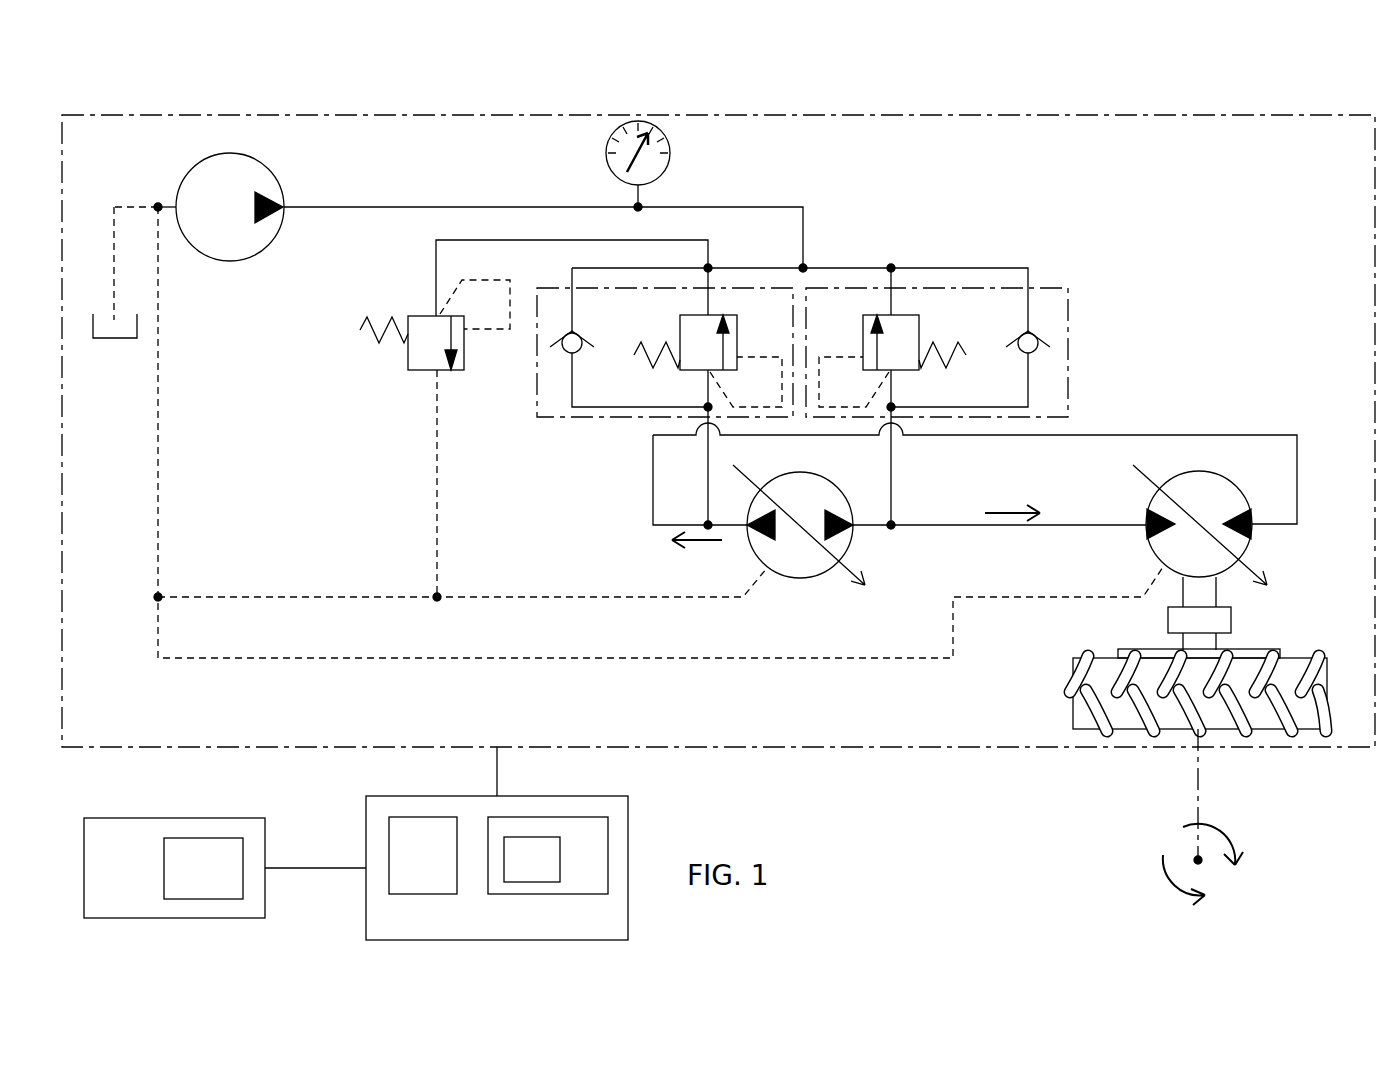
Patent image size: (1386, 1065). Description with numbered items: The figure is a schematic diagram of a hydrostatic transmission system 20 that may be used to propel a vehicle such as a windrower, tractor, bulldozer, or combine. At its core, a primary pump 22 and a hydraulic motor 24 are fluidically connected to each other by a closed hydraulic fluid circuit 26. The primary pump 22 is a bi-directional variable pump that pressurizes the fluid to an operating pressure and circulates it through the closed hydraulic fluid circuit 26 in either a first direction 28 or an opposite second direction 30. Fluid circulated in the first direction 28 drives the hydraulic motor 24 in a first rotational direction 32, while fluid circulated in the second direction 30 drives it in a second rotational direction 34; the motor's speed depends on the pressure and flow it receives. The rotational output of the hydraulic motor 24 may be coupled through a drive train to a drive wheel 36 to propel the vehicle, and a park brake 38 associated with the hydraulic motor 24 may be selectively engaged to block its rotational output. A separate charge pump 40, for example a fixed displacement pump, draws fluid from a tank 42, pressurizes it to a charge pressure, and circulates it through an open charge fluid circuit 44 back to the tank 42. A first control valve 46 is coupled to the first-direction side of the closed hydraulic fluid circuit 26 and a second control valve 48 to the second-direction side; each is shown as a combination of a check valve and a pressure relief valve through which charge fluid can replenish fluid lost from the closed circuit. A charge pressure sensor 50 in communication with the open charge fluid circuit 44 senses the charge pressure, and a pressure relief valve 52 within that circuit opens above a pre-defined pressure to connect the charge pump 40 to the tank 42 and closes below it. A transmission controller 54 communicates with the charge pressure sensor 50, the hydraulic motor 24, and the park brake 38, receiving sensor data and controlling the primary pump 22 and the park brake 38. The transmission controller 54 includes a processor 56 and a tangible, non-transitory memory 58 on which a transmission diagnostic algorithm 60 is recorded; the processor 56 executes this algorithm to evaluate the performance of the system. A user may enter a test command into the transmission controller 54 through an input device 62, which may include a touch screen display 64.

The hydrostatic transmission system 20 is at (857, 75).
The primary pump 22 is at (790, 578).
The hydraulic motor 24 is at (1250, 553).
The closed hydraulic fluid circuit 26 is at (1065, 435).
The first direction 28 is at (993, 507).
The second direction 30 is at (703, 545).
The first rotational direction 32 is at (1170, 880).
The second rotational direction 34 is at (1225, 832).
The drive wheel 36 is at (1328, 666).
The park brake 38 is at (1231, 622).
The charge pump 40 is at (192, 170).
The tank 42 is at (103, 338).
The open charge fluid circuit 44 is at (478, 207).
The first control valve 46 is at (1050, 284).
The second control valve 48 is at (568, 418).
The charge pressure sensor 50 is at (671, 152).
The pressure relief valve 52 is at (464, 362).
The transmission controller 54 is at (458, 930).
The processor 56 is at (409, 871).
The memory 58 is at (571, 854).
The transmission diagnostic algorithm 60 is at (518, 876).
The input device 62 is at (108, 886).
The touch screen display 64 is at (190, 886).